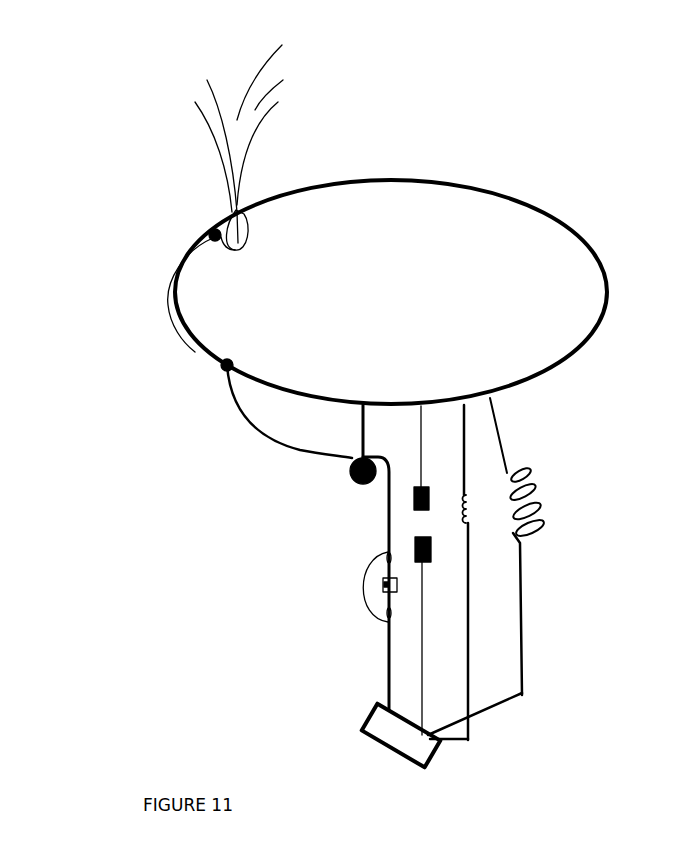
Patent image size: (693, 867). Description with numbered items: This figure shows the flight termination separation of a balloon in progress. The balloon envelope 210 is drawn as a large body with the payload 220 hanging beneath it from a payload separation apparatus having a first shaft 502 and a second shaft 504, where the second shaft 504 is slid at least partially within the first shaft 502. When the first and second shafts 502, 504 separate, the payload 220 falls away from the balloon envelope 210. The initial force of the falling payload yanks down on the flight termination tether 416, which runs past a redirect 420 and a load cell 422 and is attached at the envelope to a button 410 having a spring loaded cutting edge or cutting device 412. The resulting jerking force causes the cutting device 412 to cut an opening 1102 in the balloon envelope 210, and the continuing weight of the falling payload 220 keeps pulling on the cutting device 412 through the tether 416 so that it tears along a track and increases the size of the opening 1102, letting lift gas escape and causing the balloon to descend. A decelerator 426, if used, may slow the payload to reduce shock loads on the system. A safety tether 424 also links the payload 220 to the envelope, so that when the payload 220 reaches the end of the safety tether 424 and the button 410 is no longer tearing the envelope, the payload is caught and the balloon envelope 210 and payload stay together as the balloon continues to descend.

The balloon envelope 210 is at (549, 212).
The payload 220 is at (375, 708).
The button 410 is at (211, 231).
The cutting device 412 is at (228, 245).
The pull cord 416 is at (373, 573).
The redirect 420 is at (353, 485).
The load cell 422 is at (383, 583).
The safety tether 424 is at (493, 410).
The decelerator 426 is at (468, 652).
The first shaft 502 is at (432, 550).
The second shaft 504 is at (429, 495).
The opening 1102 is at (247, 238).